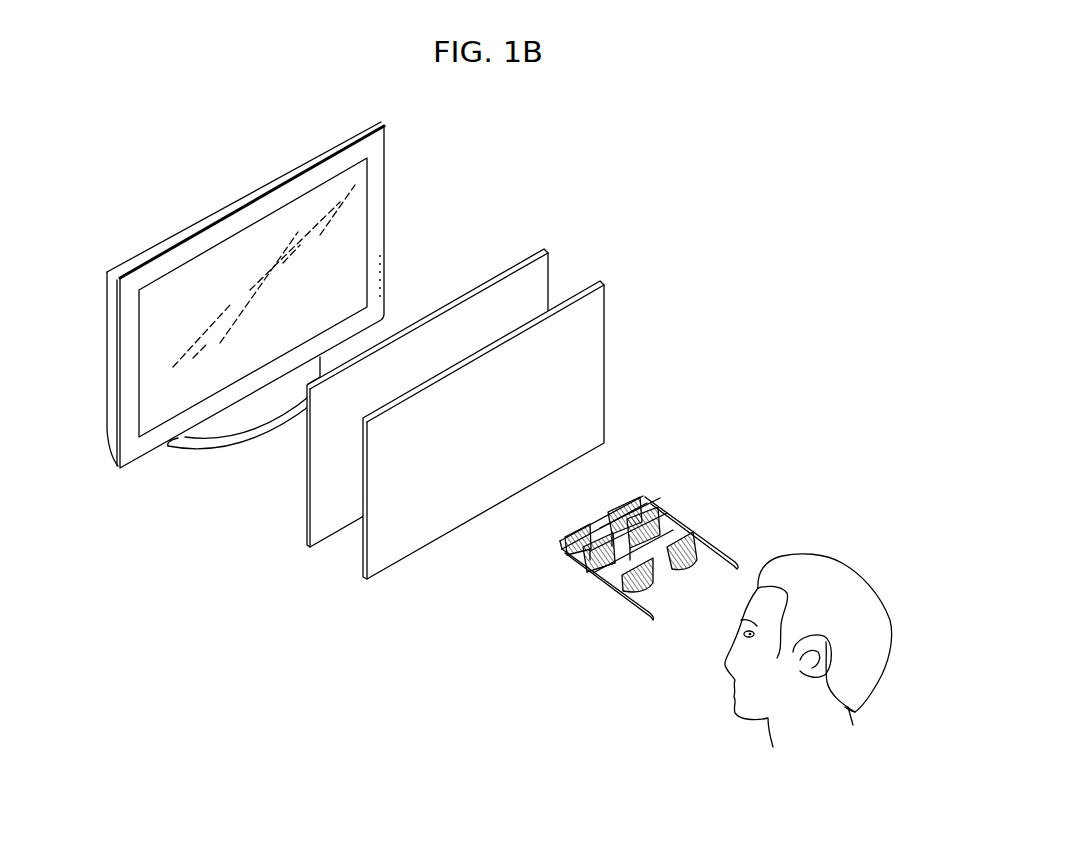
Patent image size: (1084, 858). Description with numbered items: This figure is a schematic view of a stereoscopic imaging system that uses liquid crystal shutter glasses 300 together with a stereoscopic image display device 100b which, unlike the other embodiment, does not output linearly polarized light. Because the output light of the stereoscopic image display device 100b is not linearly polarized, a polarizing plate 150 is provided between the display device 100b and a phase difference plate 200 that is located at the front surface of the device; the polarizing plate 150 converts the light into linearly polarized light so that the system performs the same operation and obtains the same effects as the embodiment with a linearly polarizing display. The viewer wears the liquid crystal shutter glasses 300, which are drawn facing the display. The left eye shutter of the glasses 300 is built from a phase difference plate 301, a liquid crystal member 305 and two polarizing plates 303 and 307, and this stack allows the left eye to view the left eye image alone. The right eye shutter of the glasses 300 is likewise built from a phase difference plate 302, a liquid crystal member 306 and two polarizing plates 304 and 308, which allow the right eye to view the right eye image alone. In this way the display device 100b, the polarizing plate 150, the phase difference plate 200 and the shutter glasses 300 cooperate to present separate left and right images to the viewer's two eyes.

The stereoscopic image display device 100b is at (390, 174).
The polarizing plate 150 is at (552, 264).
The phase difference plate 200 is at (612, 318).
The liquid crystal shutter glasses 300 is at (636, 570).
The phase difference plate 301 is at (562, 543).
The phase difference plate 302 is at (631, 497).
The polarizing plate 303 is at (590, 550).
The polarizing plate 304 is at (657, 517).
The liquid crystal member 305 is at (607, 573).
The liquid crystal member 306 is at (693, 545).
The polarizing plate 307 is at (623, 585).
The polarizing plate 308 is at (713, 550).